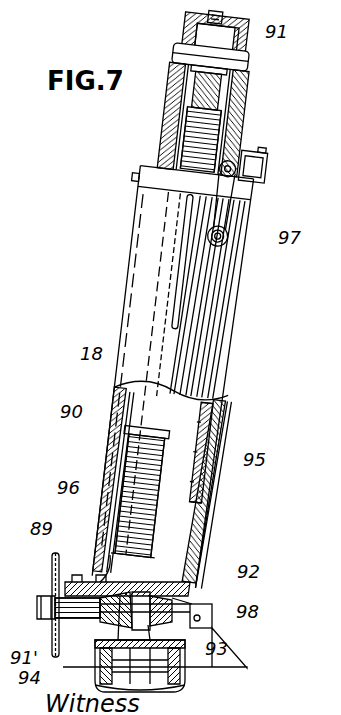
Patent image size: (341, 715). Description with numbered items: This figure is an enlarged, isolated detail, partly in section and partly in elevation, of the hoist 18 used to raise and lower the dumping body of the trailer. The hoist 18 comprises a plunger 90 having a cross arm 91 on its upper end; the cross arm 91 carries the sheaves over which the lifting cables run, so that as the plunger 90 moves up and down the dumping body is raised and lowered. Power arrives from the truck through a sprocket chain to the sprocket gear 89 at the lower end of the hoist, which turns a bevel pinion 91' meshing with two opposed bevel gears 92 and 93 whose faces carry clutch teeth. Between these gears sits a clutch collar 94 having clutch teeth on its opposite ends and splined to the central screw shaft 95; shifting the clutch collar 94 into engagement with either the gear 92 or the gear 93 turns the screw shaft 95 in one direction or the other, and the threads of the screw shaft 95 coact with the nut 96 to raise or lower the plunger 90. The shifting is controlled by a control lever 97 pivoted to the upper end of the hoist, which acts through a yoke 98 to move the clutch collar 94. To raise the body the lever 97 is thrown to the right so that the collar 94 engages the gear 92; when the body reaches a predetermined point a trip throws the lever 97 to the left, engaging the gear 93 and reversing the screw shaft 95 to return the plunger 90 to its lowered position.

The cross arm 91 is at (220, 95).
The control lever 97 is at (222, 203).
The hoist 18 is at (169, 377).
The plunger 90 is at (173, 388).
The nut 96 is at (140, 492).
The screw shaft 95 is at (201, 452).
The sprocket gear 89 is at (55, 553).
The bevel gear 92 is at (185, 592).
The yoke 98 is at (197, 614).
The bevel gear 93 is at (155, 660).
The bevel pinion 91' is at (68, 623).
The clutch collar 94 is at (112, 636).